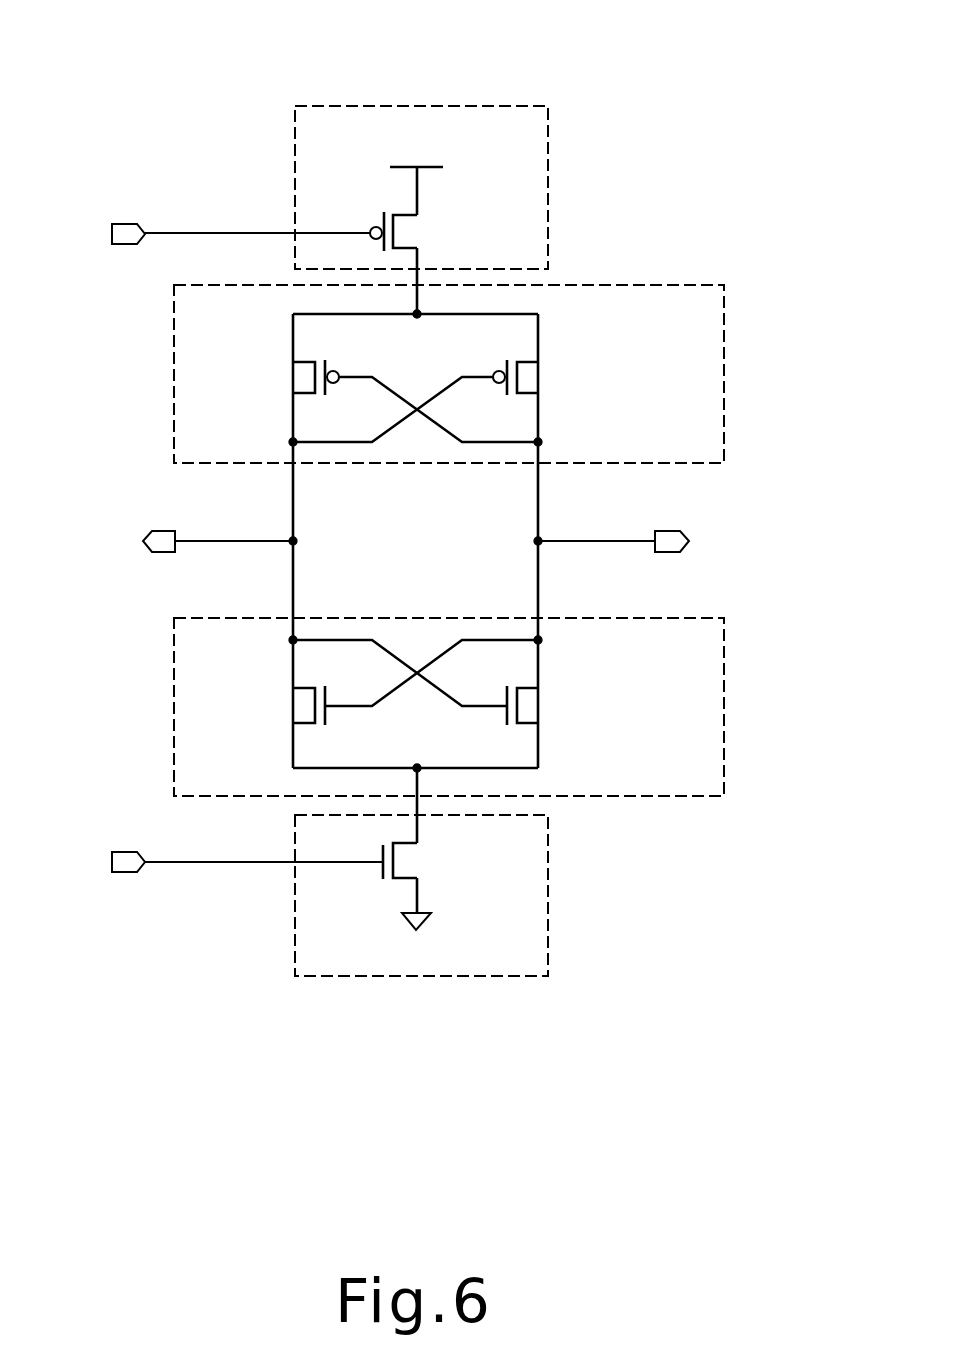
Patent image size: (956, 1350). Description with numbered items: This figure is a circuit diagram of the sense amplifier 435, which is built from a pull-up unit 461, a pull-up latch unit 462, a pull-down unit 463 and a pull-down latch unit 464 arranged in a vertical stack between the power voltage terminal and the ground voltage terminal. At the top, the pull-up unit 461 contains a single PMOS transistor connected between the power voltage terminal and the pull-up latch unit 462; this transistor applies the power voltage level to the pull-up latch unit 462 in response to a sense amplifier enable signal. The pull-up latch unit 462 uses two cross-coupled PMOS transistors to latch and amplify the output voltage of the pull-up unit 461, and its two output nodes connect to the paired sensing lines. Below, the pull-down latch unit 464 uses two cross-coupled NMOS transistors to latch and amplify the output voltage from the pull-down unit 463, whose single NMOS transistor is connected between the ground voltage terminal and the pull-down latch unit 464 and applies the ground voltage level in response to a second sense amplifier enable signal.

The sense amplifier 435 is at (544, 67).
The pull-up unit 461 is at (548, 153).
The pull-up latch unit 462 is at (724, 379).
The pull-down unit 463 is at (548, 862).
The pull-down latch unit 464 is at (724, 715).